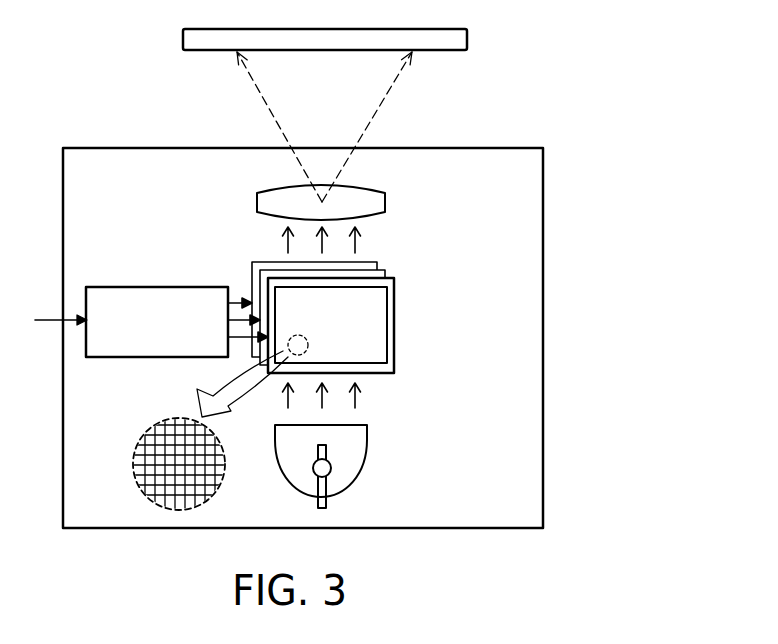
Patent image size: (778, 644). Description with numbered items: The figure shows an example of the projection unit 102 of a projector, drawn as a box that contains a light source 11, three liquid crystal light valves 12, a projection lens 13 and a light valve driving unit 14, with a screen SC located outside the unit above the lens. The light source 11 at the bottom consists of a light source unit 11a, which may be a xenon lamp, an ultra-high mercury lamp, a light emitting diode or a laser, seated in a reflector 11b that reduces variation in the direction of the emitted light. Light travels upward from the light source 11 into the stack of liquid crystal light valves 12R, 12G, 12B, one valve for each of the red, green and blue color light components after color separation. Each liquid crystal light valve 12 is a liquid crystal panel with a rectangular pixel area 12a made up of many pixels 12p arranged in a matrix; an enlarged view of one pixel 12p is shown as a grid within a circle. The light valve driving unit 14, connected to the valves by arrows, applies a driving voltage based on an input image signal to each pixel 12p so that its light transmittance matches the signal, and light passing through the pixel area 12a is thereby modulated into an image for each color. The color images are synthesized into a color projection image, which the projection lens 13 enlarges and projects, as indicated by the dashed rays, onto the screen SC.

The projection unit 102 is at (97, 148).
The screen SC is at (452, 52).
The projection lens 13 is at (373, 203).
The light valve driving unit 14 is at (184, 287).
The liquid crystal light valve 12 is at (387, 308).
The liquid crystal light valve for blue 12B is at (375, 264).
The liquid crystal light valve for green 12G is at (377, 273).
The liquid crystal light valve for red 12R is at (392, 310).
The pixel area 12a is at (372, 340).
The pixel 12p is at (167, 432).
The light source 11 is at (334, 466).
The light source unit 11a is at (331, 468).
The reflector 11b is at (287, 478).